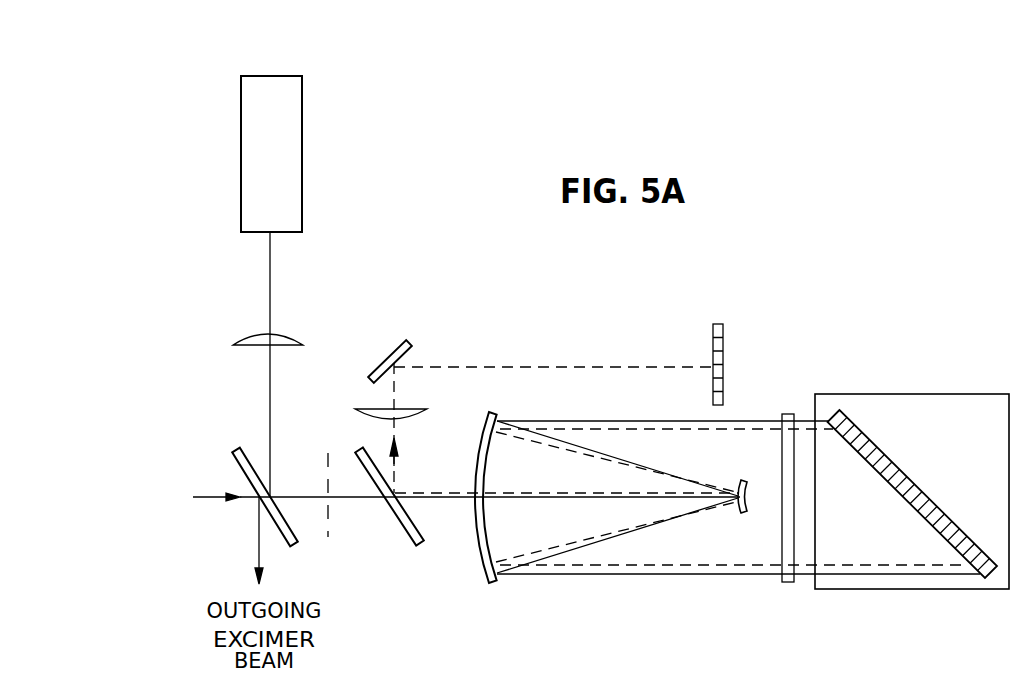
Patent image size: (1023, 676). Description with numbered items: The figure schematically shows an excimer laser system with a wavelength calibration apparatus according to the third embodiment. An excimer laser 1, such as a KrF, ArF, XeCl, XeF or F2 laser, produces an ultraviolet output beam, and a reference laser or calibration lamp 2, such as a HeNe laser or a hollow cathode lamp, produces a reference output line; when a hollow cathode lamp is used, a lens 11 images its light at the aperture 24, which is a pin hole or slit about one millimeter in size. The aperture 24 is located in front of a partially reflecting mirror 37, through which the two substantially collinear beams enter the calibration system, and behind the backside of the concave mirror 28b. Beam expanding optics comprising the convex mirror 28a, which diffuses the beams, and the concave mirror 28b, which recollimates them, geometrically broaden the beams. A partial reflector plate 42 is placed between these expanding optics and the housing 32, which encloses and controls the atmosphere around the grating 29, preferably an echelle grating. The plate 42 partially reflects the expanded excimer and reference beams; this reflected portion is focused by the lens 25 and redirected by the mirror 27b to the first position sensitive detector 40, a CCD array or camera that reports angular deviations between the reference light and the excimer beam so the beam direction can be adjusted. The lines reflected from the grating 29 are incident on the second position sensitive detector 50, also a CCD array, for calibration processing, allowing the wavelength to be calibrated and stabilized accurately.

The excimer laser 1 is at (205, 498).
The reference laser or calibration lamp 2 is at (278, 158).
The lens 11 is at (244, 335).
The aperture 24 is at (328, 528).
The lens 25 is at (356, 410).
The mirror 27b is at (412, 346).
The convex mirror 28a is at (746, 514).
The concave mirror 28b is at (496, 586).
The grating 29 is at (930, 497).
The housing 32 is at (933, 590).
The partially reflecting mirror 37 is at (420, 546).
The first position sensitive detector 40 is at (756, 364).
The partial reflector plate 42 is at (790, 584).
The second position sensitive detector 50 is at (725, 347).